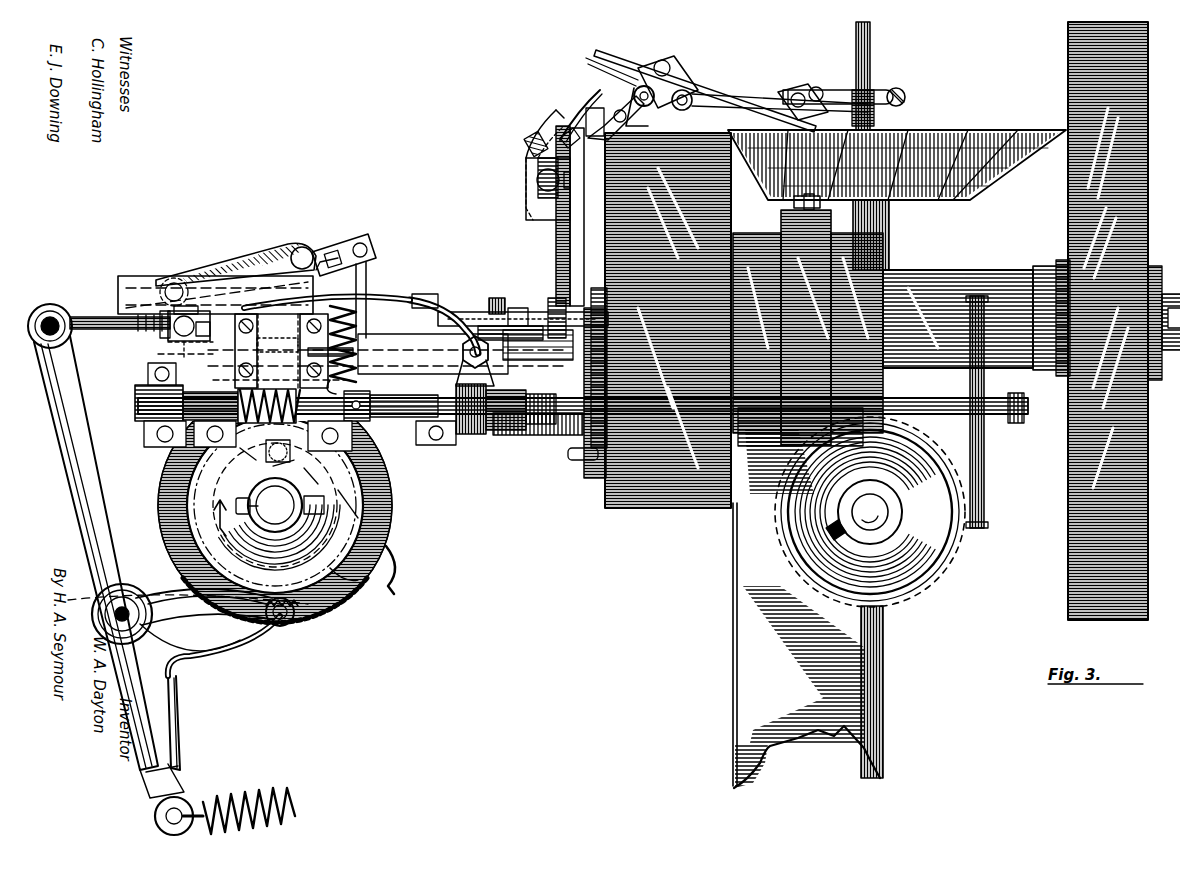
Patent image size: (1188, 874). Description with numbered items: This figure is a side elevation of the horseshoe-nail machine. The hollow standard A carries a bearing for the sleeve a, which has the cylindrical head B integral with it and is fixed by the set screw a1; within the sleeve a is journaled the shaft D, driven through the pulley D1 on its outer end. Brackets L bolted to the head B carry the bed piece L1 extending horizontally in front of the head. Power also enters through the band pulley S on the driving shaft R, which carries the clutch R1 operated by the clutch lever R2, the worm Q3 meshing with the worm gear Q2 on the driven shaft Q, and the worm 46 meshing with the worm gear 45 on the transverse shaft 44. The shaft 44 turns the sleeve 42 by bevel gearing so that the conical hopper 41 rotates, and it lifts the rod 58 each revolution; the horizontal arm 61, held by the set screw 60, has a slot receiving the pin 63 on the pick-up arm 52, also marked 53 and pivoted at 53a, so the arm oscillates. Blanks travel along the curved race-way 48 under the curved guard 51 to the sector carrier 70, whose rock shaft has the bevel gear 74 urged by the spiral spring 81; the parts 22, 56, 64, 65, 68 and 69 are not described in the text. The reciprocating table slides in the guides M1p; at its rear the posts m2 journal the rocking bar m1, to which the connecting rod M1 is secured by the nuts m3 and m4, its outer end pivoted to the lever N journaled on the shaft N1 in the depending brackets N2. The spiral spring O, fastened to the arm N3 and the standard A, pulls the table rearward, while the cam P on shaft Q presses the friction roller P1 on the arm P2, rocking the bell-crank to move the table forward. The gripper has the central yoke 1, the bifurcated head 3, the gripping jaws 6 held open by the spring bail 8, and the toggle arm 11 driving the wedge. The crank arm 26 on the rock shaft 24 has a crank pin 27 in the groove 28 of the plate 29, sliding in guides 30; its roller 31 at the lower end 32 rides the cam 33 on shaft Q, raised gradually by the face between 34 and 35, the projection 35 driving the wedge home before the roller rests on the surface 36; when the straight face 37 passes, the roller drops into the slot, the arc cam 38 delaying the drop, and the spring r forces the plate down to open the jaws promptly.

The lever N is at (106, 551).
The shaft N1 is at (118, 625).
The depending brackets N2 is at (188, 607).
The arm of lever N N3 is at (168, 708).
The spiral spring O is at (225, 803).
The cam P is at (396, 561).
The friction roller P1 is at (290, 594).
The arm P2 is at (210, 648).
The driven shaft Q is at (275, 505).
The worm gear Q2 is at (336, 566).
The worm Q3 is at (295, 403).
The roller 31 is at (283, 442).
The lower end of plate 32 is at (239, 499).
The cam 33 is at (332, 506).
The cam face point 34 is at (284, 471).
The projection 35 is at (239, 462).
The cam surface 36 is at (224, 523).
The straight face 37 is at (316, 477).
The arc shaped face cam 38 is at (348, 495).
The driving shaft R is at (545, 392).
The clutch R1 is at (462, 412).
The clutch lever R2 is at (396, 292).
The brackets L is at (583, 470).
The bed piece or frame L1 is at (538, 438).
The spring r is at (338, 353).
The guides M1p is at (390, 352).
The connecting rod M1 is at (120, 332).
The rocking bar m1 is at (190, 354).
The post m2 is at (152, 328).
The nut m3 is at (197, 323).
The nut m4 is at (175, 340).
The central yoke 1 is at (345, 350).
The bifurcated gripper head 3 is at (478, 308).
The gripping jaws 6 is at (520, 325).
The spring bail 8 is at (415, 290).
The toggle lever arm 11 is at (360, 262).
The bracket 22 is at (344, 248).
The rock shaft 24 is at (296, 246).
The crank-arm 26 is at (266, 250).
The crank pin 27 is at (165, 276).
The groove 28 is at (205, 295).
The vertically reciprocating frame or plate 29 is at (283, 351).
The guides 30 is at (282, 351).
The bevel gear 74 is at (490, 290).
The spiral spring 81 is at (548, 248).
The sector shaped carrier 70 is at (579, 217).
The curved race-way 48 is at (588, 214).
The arm 69 is at (562, 143).
The curved guard 51 is at (544, 129).
The arm 68 is at (581, 113).
The lever 65 is at (616, 118).
The pivot 53a is at (654, 107).
The pin 63 is at (672, 82).
The rod 64 is at (600, 56).
The pivot 56 is at (701, 88).
The pick-up arm 52 is at (780, 109).
The pick-up arm 53 is at (750, 100).
The horizontal arm 61 is at (814, 82).
The set screw 60 is at (898, 90).
The rod 58 is at (877, 76).
The conically shaped hopper 41 is at (897, 150).
The set screw a1 is at (812, 195).
The vertically arranged sleeve 42 is at (882, 212).
The cylindrical head B is at (661, 332).
The sleeve a is at (883, 328).
The band pulley S is at (995, 412).
The shaft D is at (1051, 311).
The pulley D1 is at (1124, 321).
The worm gear 45 is at (870, 512).
The worm 46 is at (866, 420).
The transverse shaft 44 is at (878, 518).
The hollow standard A is at (808, 608).